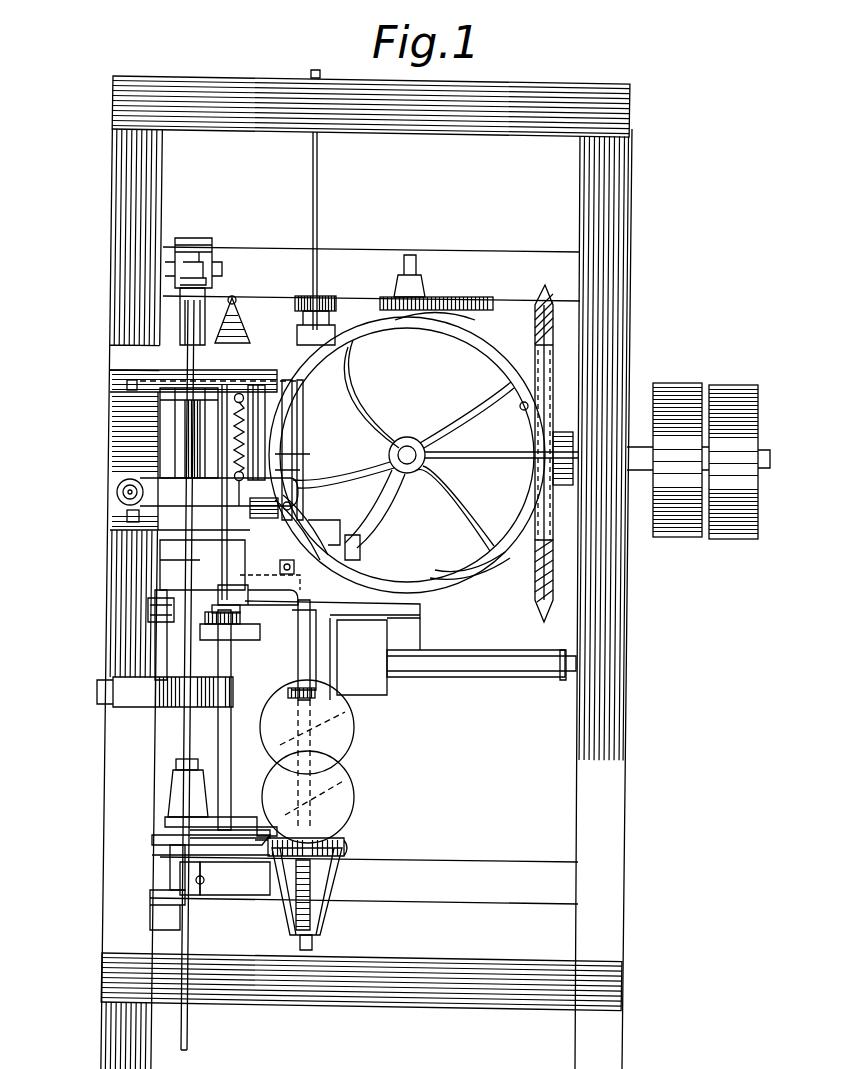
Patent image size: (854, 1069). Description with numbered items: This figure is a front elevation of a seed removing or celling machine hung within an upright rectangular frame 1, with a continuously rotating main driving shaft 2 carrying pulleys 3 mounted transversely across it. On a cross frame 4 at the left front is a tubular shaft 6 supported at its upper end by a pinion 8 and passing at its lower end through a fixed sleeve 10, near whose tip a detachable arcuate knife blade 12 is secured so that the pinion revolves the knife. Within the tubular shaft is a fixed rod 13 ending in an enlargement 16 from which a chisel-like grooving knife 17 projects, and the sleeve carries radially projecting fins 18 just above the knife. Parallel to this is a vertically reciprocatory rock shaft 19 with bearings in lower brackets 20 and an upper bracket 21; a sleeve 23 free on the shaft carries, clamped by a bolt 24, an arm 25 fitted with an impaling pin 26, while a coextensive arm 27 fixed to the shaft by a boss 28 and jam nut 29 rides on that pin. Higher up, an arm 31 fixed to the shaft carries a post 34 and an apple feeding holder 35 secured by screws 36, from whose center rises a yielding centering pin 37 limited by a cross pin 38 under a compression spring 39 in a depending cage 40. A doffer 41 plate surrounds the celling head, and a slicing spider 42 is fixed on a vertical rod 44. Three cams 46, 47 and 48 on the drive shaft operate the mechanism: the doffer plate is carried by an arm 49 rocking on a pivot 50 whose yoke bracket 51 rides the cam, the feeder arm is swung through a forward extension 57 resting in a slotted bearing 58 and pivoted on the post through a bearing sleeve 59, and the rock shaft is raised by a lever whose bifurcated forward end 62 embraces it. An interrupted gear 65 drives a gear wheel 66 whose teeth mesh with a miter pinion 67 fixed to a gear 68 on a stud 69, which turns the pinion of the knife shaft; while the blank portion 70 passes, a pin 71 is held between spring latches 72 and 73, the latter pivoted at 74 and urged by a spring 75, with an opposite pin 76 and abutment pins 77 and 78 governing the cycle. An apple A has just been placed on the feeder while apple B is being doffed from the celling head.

The upright rectangular frame 1 is at (628, 236).
The main driving shaft 2 is at (650, 467).
The pulleys 3 is at (757, 392).
The cross frame 4 is at (407, 455).
The tubular shaft 6 is at (322, 530).
The pinion 8 is at (303, 288).
The fixed sleeve 10 is at (340, 628).
The arcuate knife blade 12 is at (300, 722).
The fixed rod 13 is at (318, 185).
The enlargement 16 is at (320, 722).
The grooving knife 17 is at (295, 745).
The fins 18 is at (312, 648).
The rock shaft 19 is at (196, 312).
The lower brackets 20 is at (150, 848).
The upper bracket 21 is at (190, 418).
The sleeve 23 is at (165, 885).
The bolt 24 is at (205, 882).
The arm 25 is at (260, 885).
The impaling pin 26 is at (340, 770).
The arm 27 is at (290, 805).
The boss 28 is at (170, 800).
The jam nut 29 is at (176, 764).
The arm 31 is at (244, 798).
The post 34 is at (240, 766).
The apple feeding holder 35 is at (345, 845).
The screws 36 is at (240, 865).
The centering pin 37 is at (345, 818).
The cross pin 38 is at (330, 865).
The compression spring 39 is at (322, 915).
The cage 40 is at (335, 930).
The doffer 41 is at (280, 686).
The spider 42 is at (100, 705).
The vertical rod 44 is at (160, 628).
The cam 46 is at (420, 516).
The cam 47 is at (262, 520).
The cam 48 is at (178, 525).
The arm 49 is at (395, 680).
The pivot 50 is at (570, 678).
The yoke bracket 51 is at (400, 625).
The forward extension 57 is at (230, 595).
The slotted bearing 58 is at (253, 630).
The bearing sleeve 59 is at (235, 680).
The bifurcated forward end 62 is at (205, 283).
The interrupted gear 65 is at (556, 343).
The gear wheel 66 is at (470, 595).
The miter pinion 67 is at (470, 318).
The gear 68 is at (447, 295).
The stud 69 is at (412, 263).
The blank portion 70 is at (533, 575).
The pin 71 is at (330, 498).
The spring latch 72 is at (305, 440).
The spring latch 73 is at (219, 492).
The pivot 74 is at (116, 490).
The spring 75 is at (236, 400).
The pin 76 is at (520, 408).
The pin 77 is at (244, 493).
The pin 78 is at (512, 462).
The apple A is at (348, 800).
The apple B is at (345, 735).